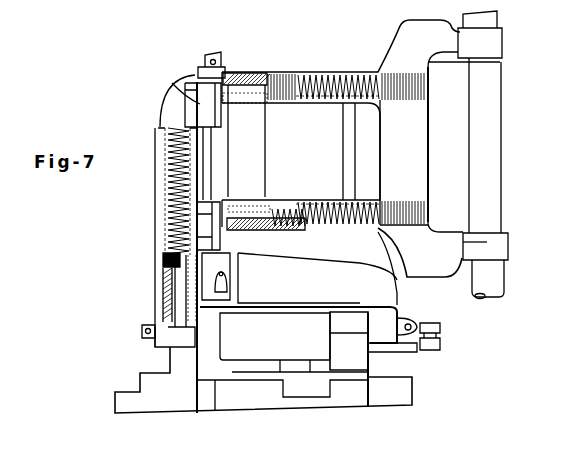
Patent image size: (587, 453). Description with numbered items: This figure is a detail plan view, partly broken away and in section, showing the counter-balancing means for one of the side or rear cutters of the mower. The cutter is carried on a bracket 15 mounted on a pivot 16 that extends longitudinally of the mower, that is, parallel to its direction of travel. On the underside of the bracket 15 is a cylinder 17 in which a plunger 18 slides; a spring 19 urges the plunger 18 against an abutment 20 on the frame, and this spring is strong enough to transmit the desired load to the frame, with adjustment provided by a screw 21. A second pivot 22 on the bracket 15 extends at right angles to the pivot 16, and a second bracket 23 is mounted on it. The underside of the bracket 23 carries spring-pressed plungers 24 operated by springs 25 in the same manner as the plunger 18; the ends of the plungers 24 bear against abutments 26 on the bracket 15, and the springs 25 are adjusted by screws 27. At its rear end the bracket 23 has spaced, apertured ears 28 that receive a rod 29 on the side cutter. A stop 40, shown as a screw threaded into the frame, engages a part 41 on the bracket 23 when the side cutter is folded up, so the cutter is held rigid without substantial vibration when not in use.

The bracket 15 is at (157, 238).
The pivot 16 is at (142, 332).
The cylinder 17 is at (167, 275).
The plunger 18 is at (182, 303).
The spring 19 is at (165, 258).
The abutment 20 is at (177, 342).
The screw 21 is at (160, 128).
The second pivot 22 is at (205, 63).
The second bracket 23 is at (392, 52).
The spring-pressed plungers 24 is at (257, 86).
The springs 25 is at (280, 78).
The abutments 26 is at (172, 96).
The screws 27 is at (410, 100).
The spaced ears 28 is at (495, 55).
The rod 29 is at (492, 135).
The stop 40 is at (443, 327).
The part 41 is at (430, 270).